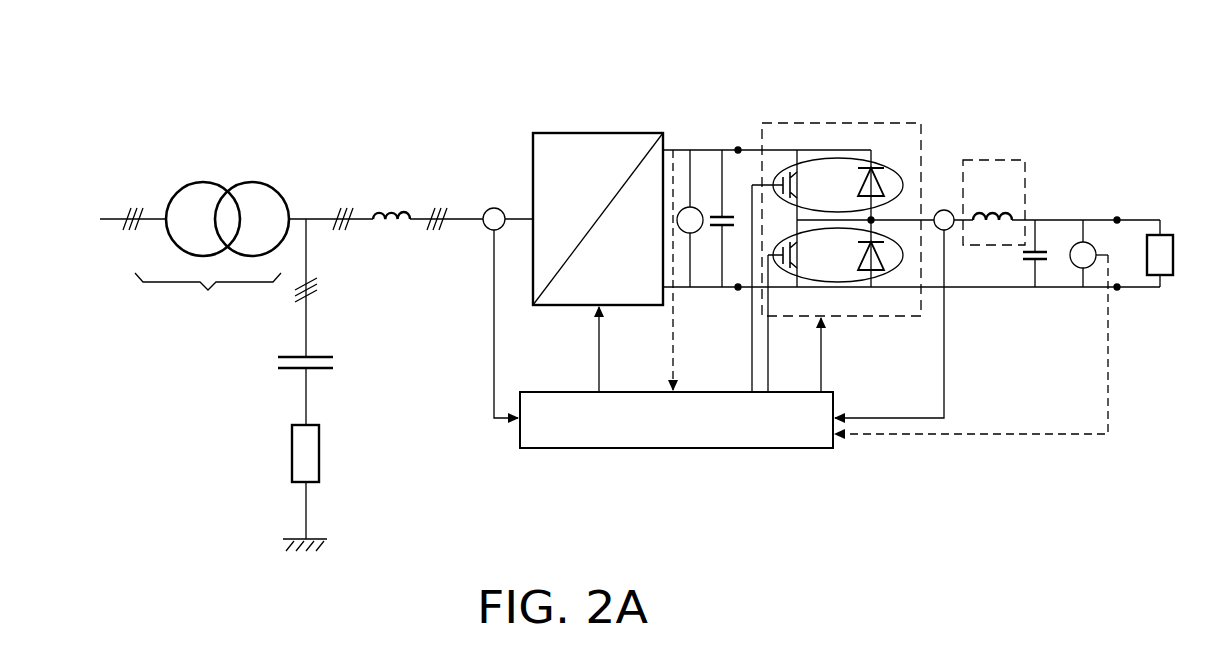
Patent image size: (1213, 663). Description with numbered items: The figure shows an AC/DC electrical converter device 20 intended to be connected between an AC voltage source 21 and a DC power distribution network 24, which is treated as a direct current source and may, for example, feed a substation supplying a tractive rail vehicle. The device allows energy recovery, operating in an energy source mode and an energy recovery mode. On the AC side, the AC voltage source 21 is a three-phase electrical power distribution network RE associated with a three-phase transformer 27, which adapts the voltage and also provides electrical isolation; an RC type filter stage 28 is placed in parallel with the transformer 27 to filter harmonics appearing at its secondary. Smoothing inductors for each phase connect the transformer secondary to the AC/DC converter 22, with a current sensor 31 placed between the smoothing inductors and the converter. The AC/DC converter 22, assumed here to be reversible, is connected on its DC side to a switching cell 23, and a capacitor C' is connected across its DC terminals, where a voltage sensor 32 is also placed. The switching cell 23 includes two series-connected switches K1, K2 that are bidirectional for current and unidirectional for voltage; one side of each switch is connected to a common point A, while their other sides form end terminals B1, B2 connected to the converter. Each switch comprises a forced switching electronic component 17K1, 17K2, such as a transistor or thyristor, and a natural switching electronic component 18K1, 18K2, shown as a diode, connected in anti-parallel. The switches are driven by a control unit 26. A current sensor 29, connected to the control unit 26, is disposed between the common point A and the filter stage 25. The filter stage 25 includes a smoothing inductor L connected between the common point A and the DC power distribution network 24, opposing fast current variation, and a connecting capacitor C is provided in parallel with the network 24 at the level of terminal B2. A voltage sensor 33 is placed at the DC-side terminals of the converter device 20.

The AC/DC electrical converter device 20 is at (624, 104).
The AC voltage source 21 is at (212, 218).
The AC/DC converter 22 is at (598, 150).
The switching cell 23 is at (867, 223).
The DC power distribution network 24 is at (1163, 265).
The filter stage 25 is at (1021, 185).
The control unit 26 is at (637, 436).
The transformer 27 is at (196, 197).
The RC type filter stage 28 is at (289, 385).
The current sensor 29 is at (950, 230).
The current sensor 31 is at (493, 208).
The voltage sensor 32 is at (690, 207).
The voltage sensor 33 is at (1090, 245).
The forced switching electronic component 17K1 is at (827, 275).
The forced switching electronic component 17K2 is at (835, 310).
The natural switching electronic component 18K1 is at (878, 192).
The natural switching electronic component 18K2 is at (876, 270).
The first switch K1 is at (842, 160).
The second switch K2 is at (828, 281).
The common point A is at (873, 219).
The end terminal B1 is at (767, 139).
The end terminal B2 is at (911, 300).
The connecting capacitor C is at (1051, 232).
The capacitor C' is at (718, 175).
The smoothing inductor L is at (992, 199).
The electrical power distribution network RE is at (122, 206).